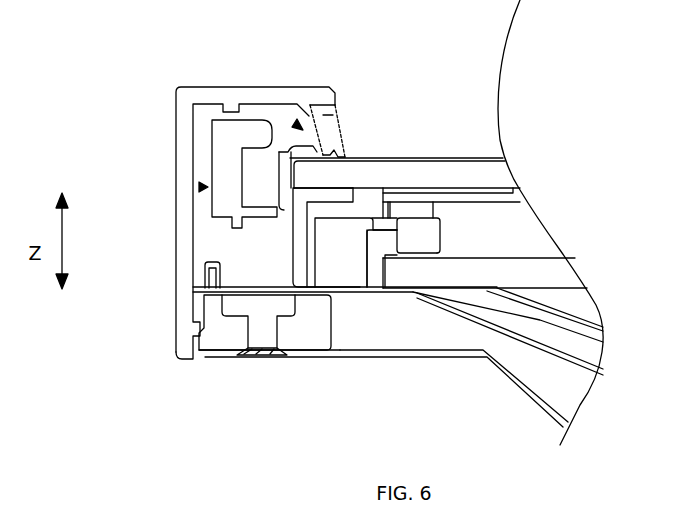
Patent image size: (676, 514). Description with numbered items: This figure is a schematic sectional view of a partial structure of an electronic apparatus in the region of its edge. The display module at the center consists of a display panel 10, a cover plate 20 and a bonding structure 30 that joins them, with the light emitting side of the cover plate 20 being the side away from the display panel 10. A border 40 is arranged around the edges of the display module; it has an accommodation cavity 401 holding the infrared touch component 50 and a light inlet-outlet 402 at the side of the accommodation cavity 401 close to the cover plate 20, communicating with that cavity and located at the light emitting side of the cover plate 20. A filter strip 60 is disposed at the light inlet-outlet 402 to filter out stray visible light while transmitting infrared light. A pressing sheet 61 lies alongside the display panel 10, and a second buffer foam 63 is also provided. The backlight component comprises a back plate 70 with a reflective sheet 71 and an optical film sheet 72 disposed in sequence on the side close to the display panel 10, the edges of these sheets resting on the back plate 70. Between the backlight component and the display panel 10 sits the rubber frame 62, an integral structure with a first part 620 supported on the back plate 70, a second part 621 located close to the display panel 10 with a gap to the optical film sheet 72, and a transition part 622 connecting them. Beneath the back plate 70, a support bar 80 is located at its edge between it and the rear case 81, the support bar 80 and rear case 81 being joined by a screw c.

The display panel 10 is at (460, 200).
The cover plate 20 is at (478, 172).
The bonding structure 30 is at (413, 190).
The border 40 is at (195, 248).
The accommodation cavity 401 is at (200, 187).
The light inlet-outlet 402 is at (297, 123).
The infrared touch component 50 is at (222, 160).
The filter strip 60 is at (330, 128).
The pressing sheet 61 is at (348, 190).
The rubber frame 62 is at (372, 318).
The first part 620 is at (335, 272).
The second part 621 is at (412, 238).
The transition part 622 is at (372, 221).
The second buffer foam 63 is at (450, 232).
The back plate 70 is at (547, 353).
The reflective sheet 71 is at (573, 310).
The optical film sheet 72 is at (535, 268).
The support bar 80 is at (219, 331).
The rear case 81 is at (317, 346).
The screw c is at (261, 346).